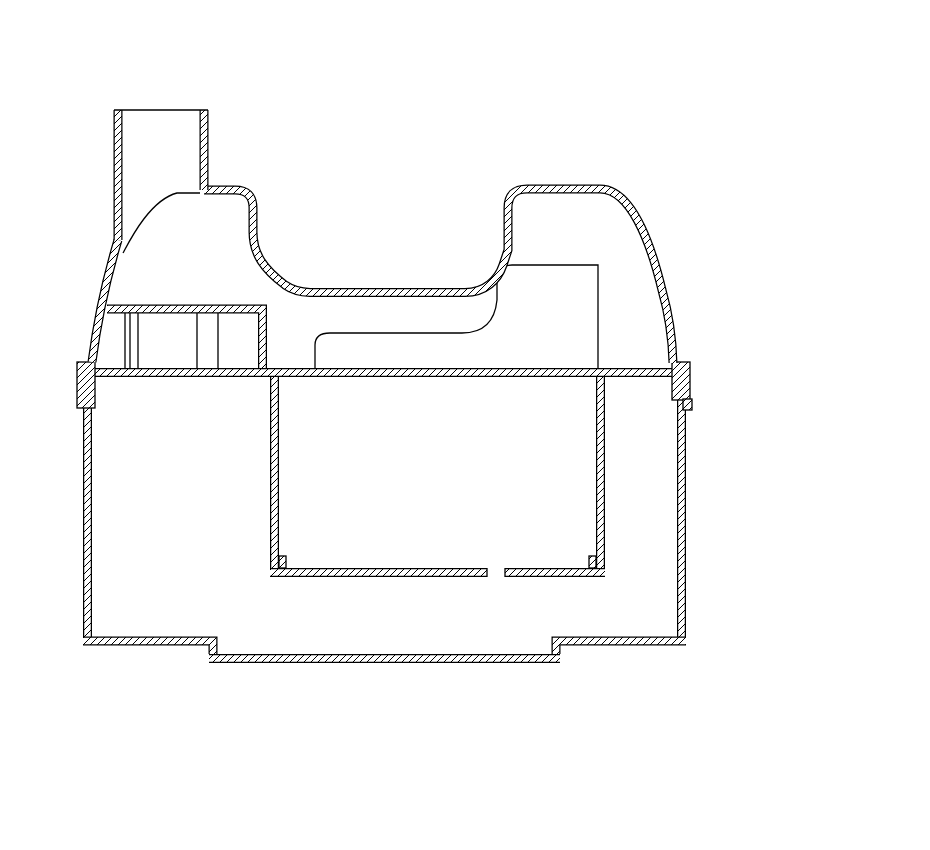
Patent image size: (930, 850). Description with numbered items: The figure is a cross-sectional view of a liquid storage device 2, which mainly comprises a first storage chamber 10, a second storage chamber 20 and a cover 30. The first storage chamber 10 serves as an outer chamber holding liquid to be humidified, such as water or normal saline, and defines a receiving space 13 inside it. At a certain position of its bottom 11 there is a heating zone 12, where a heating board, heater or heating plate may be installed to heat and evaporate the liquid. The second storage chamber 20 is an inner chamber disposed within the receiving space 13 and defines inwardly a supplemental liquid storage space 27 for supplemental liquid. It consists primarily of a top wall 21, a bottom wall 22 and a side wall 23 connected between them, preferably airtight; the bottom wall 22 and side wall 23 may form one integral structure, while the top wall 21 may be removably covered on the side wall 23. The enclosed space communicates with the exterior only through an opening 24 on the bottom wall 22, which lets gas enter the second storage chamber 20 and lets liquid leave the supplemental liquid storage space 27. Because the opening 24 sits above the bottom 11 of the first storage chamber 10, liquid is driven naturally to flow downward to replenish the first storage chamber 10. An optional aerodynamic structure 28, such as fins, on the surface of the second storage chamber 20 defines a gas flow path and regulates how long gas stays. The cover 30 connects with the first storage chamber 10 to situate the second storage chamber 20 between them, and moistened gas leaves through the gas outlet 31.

The liquid storage device 2 is at (668, 95).
The first storage chamber 10 is at (83, 596).
The bottom 11 is at (151, 648).
The heating zone 12 is at (456, 665).
The receiving space 13 is at (107, 498).
The second storage chamber 20 is at (268, 516).
The top wall 21 is at (431, 378).
The bottom wall 22 is at (340, 580).
The side wall 23 is at (606, 473).
The opening 24 is at (496, 567).
The supplemental liquid storage space 27 is at (297, 417).
The aerodynamic structure 28 is at (580, 329).
The cover 30 is at (668, 248).
The gas outlet 31 is at (160, 113).